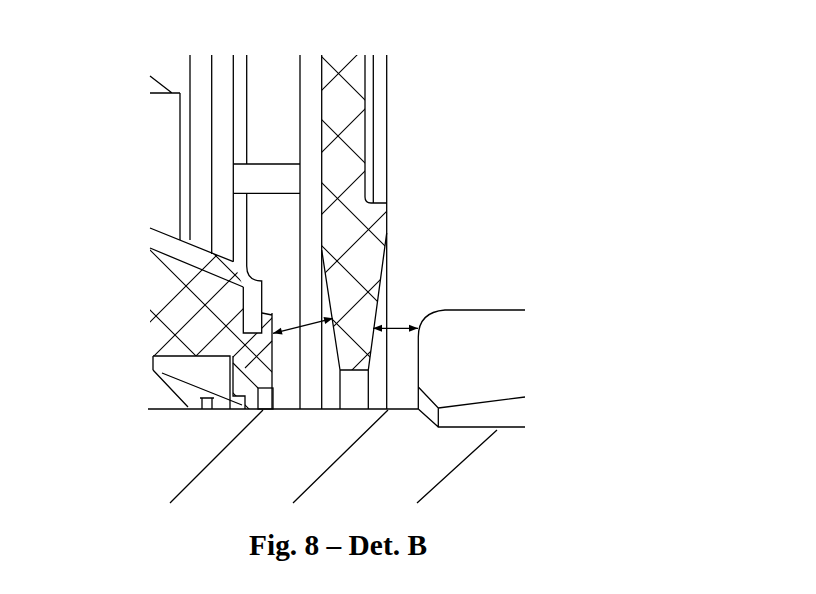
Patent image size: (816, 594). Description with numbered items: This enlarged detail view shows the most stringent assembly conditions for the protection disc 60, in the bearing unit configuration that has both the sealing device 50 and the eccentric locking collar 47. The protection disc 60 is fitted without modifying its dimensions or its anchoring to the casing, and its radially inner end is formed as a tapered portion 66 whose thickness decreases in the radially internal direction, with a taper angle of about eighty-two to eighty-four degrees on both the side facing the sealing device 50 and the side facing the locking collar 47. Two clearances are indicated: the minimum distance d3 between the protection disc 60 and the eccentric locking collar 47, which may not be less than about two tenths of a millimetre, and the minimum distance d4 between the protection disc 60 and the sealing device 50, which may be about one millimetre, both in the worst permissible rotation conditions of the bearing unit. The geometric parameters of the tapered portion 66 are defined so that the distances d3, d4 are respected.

The eccentric locking collar 47 is at (471, 368).
The sealing device 50 is at (200, 323).
The protection disc 60 is at (430, 148).
The tapered portion 66 is at (367, 260).
The minimum distance d3 is at (400, 327).
The minimum distance d4 is at (294, 326).